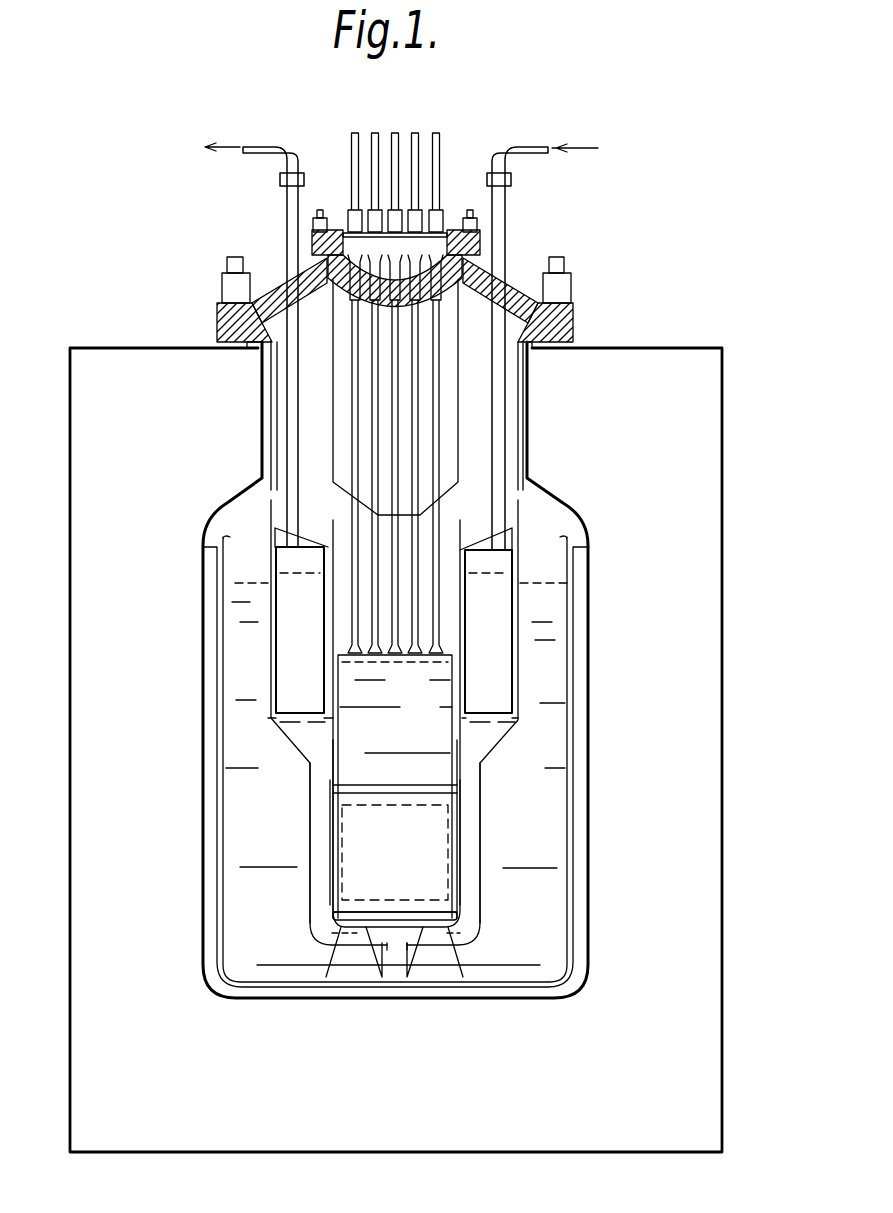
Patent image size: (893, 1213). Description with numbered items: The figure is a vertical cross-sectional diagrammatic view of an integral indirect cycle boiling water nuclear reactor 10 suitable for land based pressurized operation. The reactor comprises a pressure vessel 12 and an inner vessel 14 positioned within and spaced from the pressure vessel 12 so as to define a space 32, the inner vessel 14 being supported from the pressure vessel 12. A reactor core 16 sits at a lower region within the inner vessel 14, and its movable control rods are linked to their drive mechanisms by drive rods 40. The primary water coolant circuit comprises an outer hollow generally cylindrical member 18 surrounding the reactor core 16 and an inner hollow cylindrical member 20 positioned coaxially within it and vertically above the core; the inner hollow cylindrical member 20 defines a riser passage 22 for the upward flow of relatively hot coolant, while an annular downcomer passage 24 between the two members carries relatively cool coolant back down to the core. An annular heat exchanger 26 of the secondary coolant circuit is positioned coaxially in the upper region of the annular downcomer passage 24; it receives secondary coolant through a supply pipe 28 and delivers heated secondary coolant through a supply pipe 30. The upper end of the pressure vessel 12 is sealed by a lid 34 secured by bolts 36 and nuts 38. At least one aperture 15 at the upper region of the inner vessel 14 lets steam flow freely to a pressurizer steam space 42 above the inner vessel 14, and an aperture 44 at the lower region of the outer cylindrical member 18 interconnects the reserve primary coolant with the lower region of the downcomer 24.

The integral indirect cycle boiling water nuclear reactor 10 is at (728, 380).
The pressure vessel 12 is at (590, 793).
The inner vessel 14 is at (573, 870).
The aperture 15 is at (545, 527).
The reactor core 16 is at (430, 858).
The outer hollow generally cylindrical member 18 is at (517, 730).
The inner hollow cylindrical member 20 is at (460, 638).
The riser passage 22 is at (453, 606).
The annular downcomer passage 24 is at (320, 832).
The heat exchanger 26 is at (292, 635).
The supply pipe 28 is at (497, 200).
The supply pipe 30 is at (290, 212).
The space 32 is at (572, 978).
The lid 34 is at (512, 290).
The bolts 36 is at (562, 258).
The nuts 38 is at (573, 290).
The drive rods 40 is at (372, 390).
The pressurizer steam space 42 is at (478, 397).
The aperture 44 is at (401, 947).